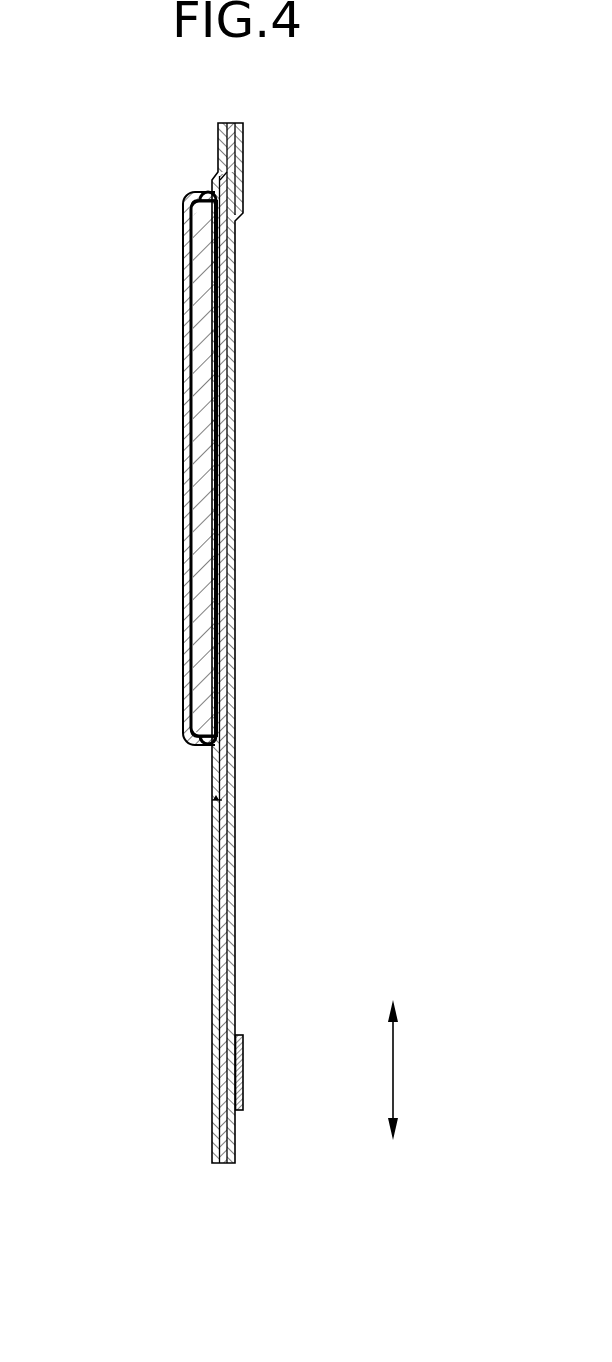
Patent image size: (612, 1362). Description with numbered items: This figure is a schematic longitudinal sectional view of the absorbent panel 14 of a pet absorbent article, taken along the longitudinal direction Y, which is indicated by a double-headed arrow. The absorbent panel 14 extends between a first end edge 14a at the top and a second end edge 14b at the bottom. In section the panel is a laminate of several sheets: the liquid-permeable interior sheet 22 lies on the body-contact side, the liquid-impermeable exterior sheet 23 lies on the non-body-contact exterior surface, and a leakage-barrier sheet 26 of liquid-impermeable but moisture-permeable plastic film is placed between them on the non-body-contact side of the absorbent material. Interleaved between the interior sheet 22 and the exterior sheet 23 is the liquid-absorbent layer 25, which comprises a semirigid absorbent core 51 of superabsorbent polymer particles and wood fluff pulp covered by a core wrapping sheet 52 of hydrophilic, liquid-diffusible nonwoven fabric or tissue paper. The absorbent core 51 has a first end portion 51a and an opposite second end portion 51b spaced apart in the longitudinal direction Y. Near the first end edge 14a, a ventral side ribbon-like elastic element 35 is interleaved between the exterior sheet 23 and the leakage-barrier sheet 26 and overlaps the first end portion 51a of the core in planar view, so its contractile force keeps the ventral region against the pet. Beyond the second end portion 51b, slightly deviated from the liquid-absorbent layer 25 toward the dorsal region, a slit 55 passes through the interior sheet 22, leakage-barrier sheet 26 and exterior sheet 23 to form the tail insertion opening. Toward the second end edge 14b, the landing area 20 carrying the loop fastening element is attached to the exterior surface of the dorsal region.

The absorbent panel 14 is at (261, 638).
The first end edge 14a is at (238, 122).
The second end edge 14b is at (226, 1163).
The landing area 20 is at (243, 1072).
The interior sheet 22 is at (183, 318).
The exterior sheet 23 is at (236, 290).
The liquid-absorbent layer 25 is at (132, 468).
The leakage-barrier sheet 26 is at (229, 322).
The ventral side ribbon-like elastic element 35 is at (232, 195).
The absorbent core 51 is at (198, 503).
The first end portion 51a is at (207, 196).
The second end portion 51b is at (210, 742).
The core wrapping sheet 52 is at (186, 541).
The slit 55 is at (213, 801).
The longitudinal direction Y is at (393, 1076).